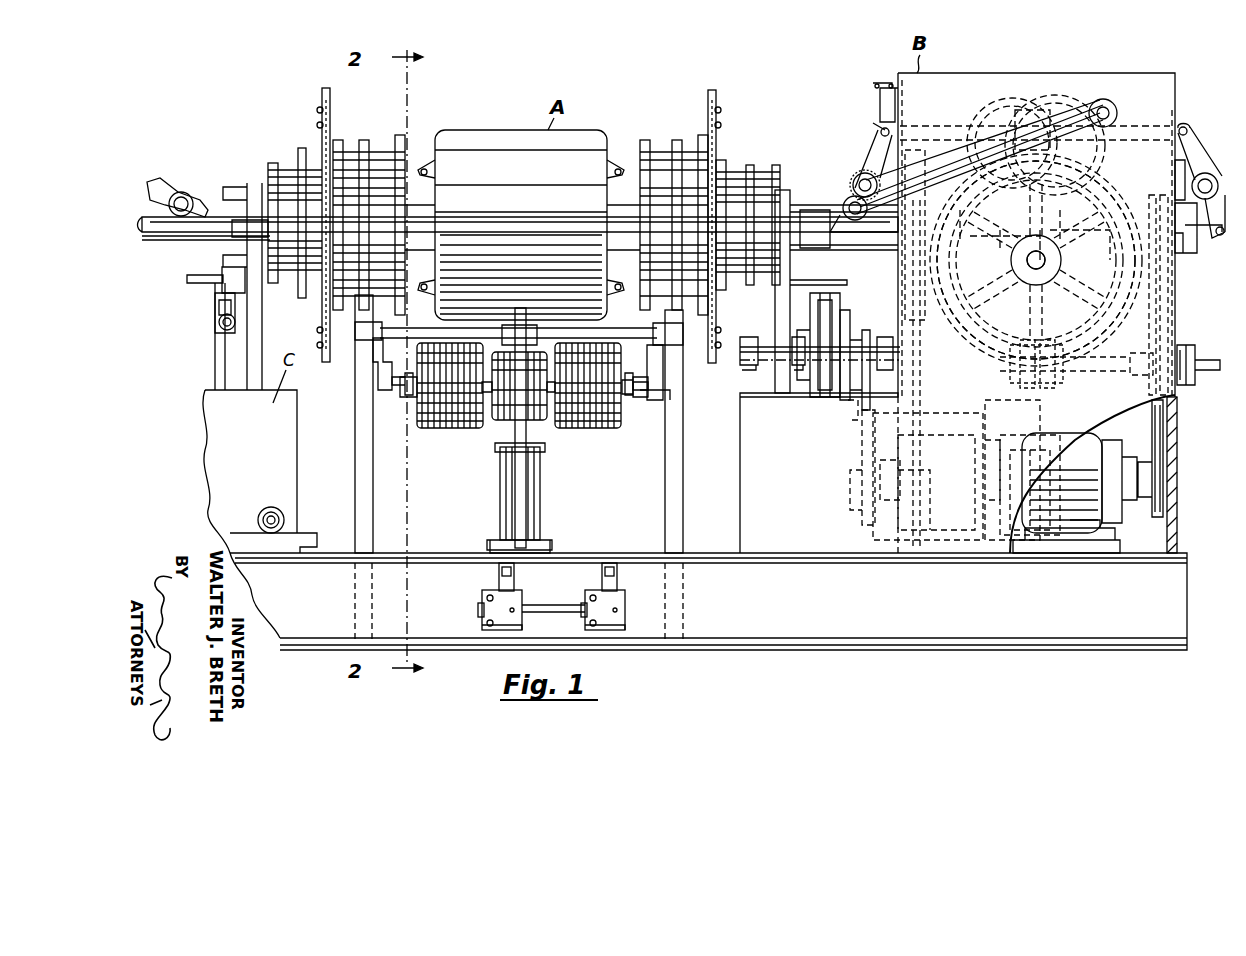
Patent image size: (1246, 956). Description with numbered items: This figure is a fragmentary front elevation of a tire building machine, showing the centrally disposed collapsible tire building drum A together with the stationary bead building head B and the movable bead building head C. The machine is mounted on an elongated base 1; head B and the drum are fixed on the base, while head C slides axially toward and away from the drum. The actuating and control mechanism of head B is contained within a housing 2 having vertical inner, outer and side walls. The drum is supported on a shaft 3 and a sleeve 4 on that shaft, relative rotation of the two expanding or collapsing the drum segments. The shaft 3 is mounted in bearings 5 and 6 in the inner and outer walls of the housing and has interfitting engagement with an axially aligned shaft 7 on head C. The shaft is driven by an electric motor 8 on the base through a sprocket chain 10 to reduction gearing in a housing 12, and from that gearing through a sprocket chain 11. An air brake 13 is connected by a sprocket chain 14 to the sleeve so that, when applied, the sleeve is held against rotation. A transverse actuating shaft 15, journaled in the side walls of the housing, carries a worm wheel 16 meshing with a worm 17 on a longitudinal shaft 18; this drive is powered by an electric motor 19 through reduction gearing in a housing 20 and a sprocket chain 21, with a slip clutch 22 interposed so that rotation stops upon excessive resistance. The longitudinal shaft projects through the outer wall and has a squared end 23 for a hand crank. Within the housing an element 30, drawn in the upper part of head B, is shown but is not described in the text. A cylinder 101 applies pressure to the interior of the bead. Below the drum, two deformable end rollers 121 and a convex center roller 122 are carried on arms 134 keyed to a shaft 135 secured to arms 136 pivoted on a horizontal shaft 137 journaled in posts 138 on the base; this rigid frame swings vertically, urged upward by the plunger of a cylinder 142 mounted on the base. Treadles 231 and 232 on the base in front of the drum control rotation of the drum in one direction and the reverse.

The base 1 is at (790, 556).
The housing 2 is at (1148, 82).
The shaft 3 is at (1100, 250).
The sleeve 4 is at (955, 238).
The bearing 5 is at (873, 250).
The bearing 6 is at (1192, 250).
The shaft 7 is at (163, 235).
The electric motor 8 is at (985, 425).
The sprocket chain 10 is at (1012, 450).
The sprocket chain 11 is at (1178, 432).
The housing 12 is at (1112, 442).
The air brake 13 is at (835, 305).
The sprocket chain 14 is at (926, 318).
The transverse actuating shaft 15 is at (1046, 260).
The worm wheel 16 is at (1112, 328).
The worm 17 is at (1050, 380).
The longitudinal shaft 18 is at (1093, 372).
The electric motor 19 is at (1112, 527).
The housing 20 is at (937, 425).
The sprocket chain 21 is at (858, 444).
The slip clutch 22 is at (851, 323).
The squared end 23 is at (1205, 356).
The lever arm 30 is at (1015, 148).
The cylinder 101 is at (220, 328).
The deformable end roller 121 is at (427, 430).
The center roller 122 is at (502, 420).
The arm 134 is at (405, 392).
The shaft 135 is at (640, 408).
The arm 136 is at (380, 370).
The horizontal shaft 137 is at (385, 345).
The post 138 is at (358, 462).
The cylinder 142 is at (540, 480).
The treadle 231 is at (482, 625).
The treadle 232 is at (622, 622).